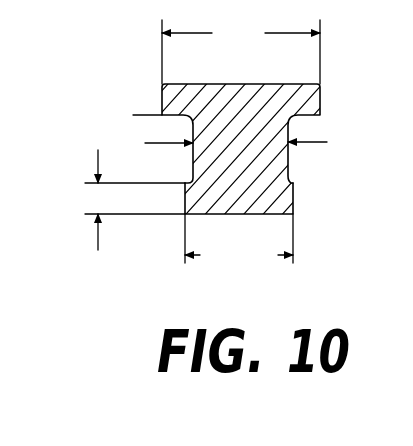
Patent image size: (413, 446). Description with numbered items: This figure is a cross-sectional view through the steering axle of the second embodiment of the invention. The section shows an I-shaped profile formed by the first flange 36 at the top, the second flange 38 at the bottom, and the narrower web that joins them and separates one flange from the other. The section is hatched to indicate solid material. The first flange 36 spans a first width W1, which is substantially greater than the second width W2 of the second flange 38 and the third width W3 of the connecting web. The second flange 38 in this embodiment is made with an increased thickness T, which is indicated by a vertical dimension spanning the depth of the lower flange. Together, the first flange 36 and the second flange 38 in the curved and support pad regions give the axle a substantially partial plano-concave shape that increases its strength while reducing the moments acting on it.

The first flange 36 is at (320, 98).
The second flange 38 is at (293, 210).
The first width W1 is at (241, 48).
The second width W2 is at (239, 255).
The third width W3 is at (259, 146).
The thickness T is at (96, 201).